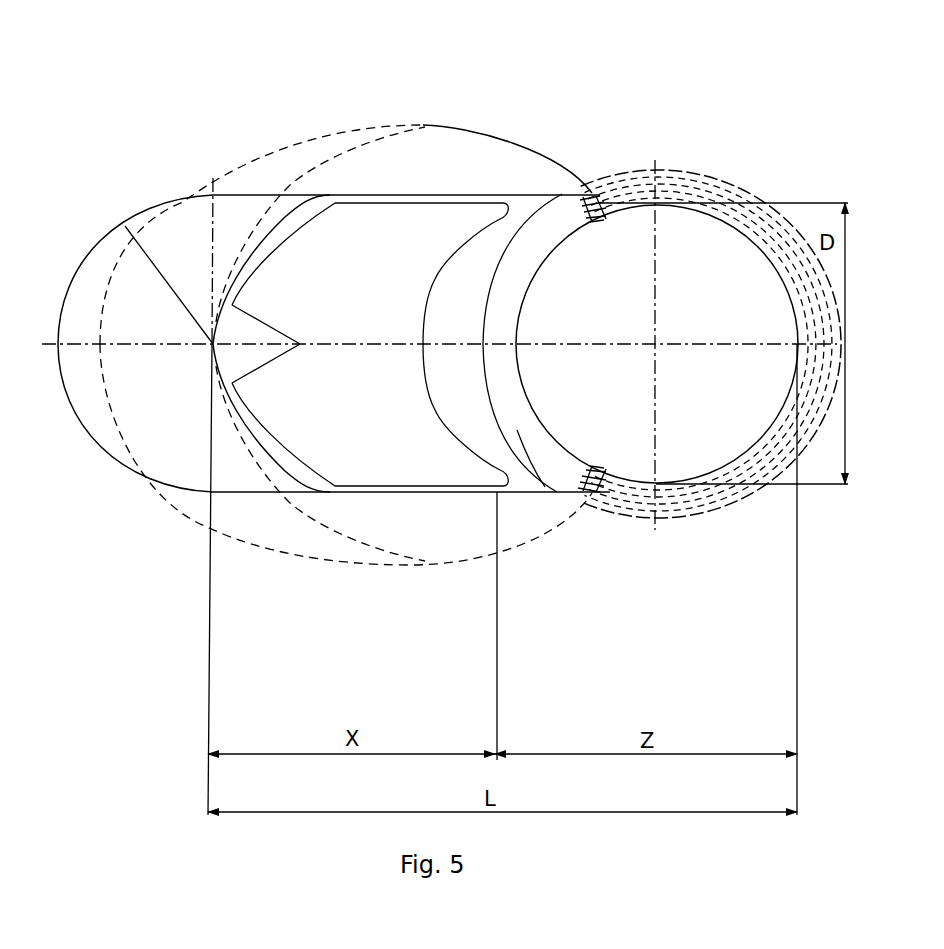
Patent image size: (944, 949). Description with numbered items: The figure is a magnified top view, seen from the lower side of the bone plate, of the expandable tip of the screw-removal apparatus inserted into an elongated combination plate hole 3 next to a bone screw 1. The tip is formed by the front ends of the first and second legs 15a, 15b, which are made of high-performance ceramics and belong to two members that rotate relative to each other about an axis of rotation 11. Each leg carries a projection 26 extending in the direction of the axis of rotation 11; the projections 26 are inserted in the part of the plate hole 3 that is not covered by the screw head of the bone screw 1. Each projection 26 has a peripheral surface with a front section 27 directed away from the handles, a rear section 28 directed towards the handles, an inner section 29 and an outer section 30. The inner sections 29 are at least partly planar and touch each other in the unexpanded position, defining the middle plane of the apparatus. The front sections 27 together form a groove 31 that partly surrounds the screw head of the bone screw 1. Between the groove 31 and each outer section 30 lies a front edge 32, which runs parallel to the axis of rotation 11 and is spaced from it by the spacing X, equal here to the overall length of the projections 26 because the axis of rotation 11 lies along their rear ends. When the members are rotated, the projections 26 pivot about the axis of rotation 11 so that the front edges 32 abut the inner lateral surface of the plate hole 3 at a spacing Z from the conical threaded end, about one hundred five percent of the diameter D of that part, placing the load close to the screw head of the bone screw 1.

The bone screw 1 is at (708, 392).
The plate hole 3 is at (457, 388).
The axis of rotation 11 is at (212, 345).
The first leg 15a is at (324, 193).
The second leg 15b is at (327, 494).
The projection 26 is at (362, 235).
The front section 27 is at (427, 317).
The rear section 28 is at (253, 268).
The inner section 29 is at (370, 344).
The outer section 30 is at (447, 202).
The groove 31 is at (448, 298).
The front edge 32 is at (505, 230).